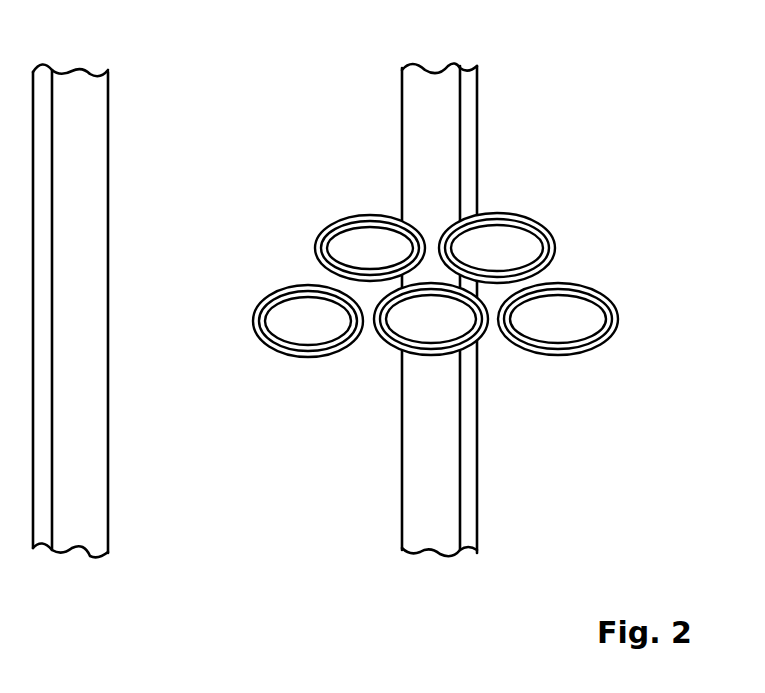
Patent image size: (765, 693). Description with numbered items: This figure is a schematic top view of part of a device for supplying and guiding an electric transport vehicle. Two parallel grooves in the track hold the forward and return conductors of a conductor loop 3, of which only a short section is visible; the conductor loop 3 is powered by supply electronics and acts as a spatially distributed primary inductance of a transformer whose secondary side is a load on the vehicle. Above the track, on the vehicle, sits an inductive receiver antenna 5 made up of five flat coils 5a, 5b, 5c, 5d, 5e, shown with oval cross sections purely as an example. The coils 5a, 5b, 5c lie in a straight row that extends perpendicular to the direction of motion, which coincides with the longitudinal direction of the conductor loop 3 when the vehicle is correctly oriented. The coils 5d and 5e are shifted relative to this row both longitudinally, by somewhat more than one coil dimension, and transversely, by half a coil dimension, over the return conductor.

The conductor loop 3 is at (430, 512).
The inductive receiver antenna 5 is at (275, 233).
The flat coil 5a is at (273, 347).
The flat coil 5b is at (373, 345).
The flat coil 5c is at (560, 353).
The flat coil 5d is at (345, 218).
The flat coil 5e is at (512, 212).